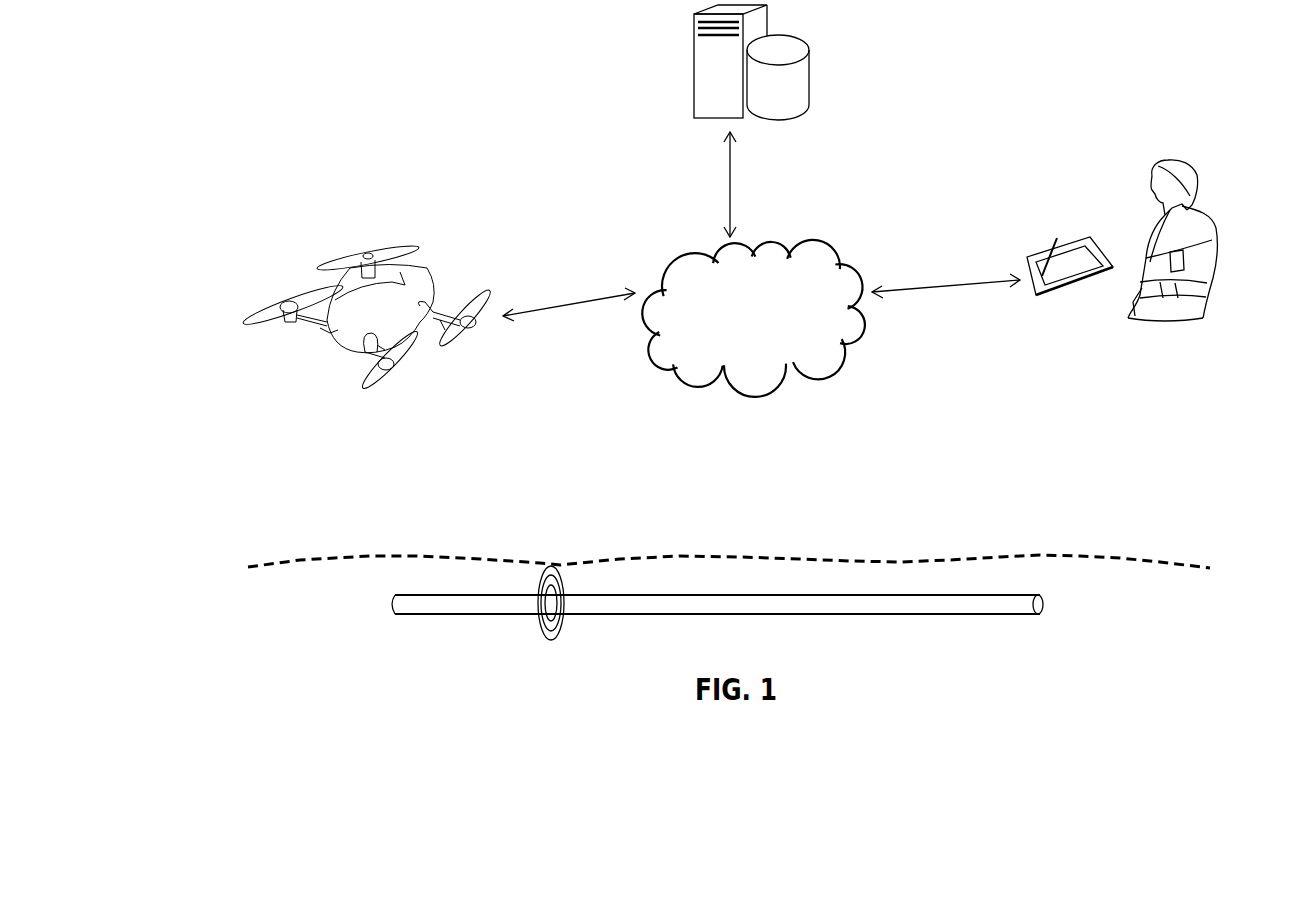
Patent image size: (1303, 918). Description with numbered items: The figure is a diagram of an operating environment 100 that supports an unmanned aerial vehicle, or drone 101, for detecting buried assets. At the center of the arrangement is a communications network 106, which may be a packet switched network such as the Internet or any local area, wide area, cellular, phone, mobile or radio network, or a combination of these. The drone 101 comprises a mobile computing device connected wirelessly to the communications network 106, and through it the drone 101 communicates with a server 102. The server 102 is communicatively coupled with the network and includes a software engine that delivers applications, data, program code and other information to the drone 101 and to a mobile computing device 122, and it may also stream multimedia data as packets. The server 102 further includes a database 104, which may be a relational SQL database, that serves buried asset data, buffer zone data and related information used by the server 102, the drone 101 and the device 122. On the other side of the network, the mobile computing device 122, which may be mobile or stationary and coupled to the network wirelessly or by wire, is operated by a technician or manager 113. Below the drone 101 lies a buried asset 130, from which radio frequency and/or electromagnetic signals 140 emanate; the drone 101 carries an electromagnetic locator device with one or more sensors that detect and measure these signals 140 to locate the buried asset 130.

The operating environment 100 is at (424, 62).
The drone 101 is at (478, 342).
The server 102 is at (696, 61).
The database 104 is at (823, 77).
The communications network 106 is at (753, 318).
The technician or manager 113 is at (1173, 284).
The mobile computing device 122 is at (1070, 297).
The buried asset 130 is at (960, 607).
The radio frequency and/or electromagnetic signals 140 is at (541, 625).